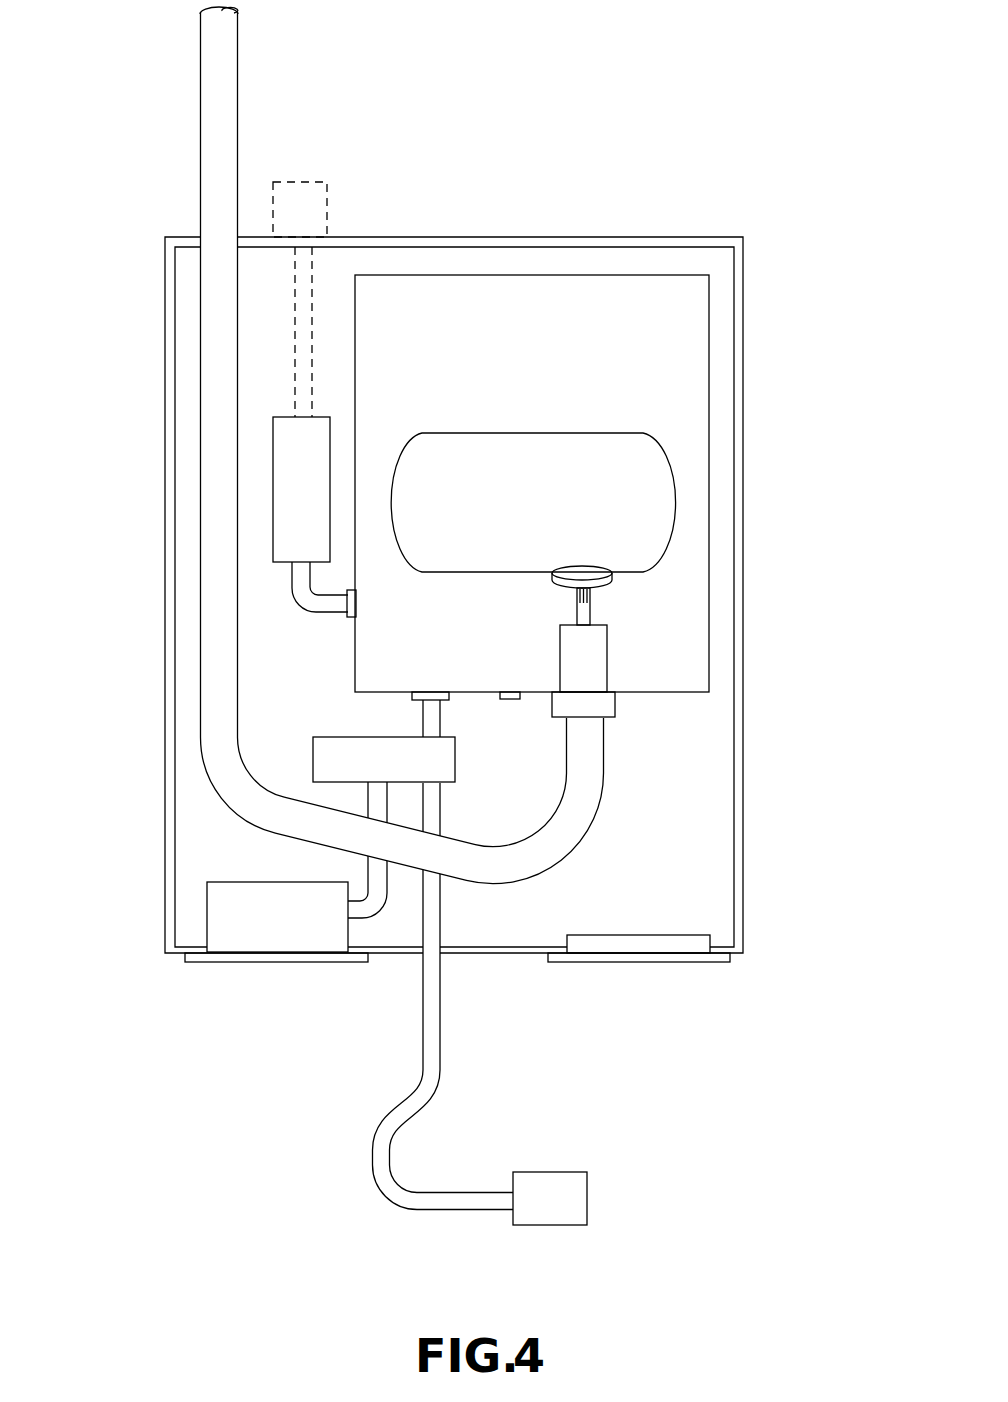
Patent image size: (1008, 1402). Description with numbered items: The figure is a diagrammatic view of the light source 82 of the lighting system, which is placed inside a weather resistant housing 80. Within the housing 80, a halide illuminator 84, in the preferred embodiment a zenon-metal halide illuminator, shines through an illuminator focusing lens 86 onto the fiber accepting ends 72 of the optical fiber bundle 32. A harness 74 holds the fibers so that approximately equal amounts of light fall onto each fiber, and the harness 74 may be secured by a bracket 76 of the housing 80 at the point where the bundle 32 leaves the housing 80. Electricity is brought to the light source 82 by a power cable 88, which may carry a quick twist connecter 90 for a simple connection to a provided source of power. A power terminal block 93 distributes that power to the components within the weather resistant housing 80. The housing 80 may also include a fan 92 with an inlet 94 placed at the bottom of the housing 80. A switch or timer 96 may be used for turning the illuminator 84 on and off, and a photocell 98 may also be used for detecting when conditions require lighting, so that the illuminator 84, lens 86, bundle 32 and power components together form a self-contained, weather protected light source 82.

The optical fiber bundle 32 is at (220, 130).
The fiber accepting ends 72 is at (590, 612).
The harness 74 is at (607, 660).
The bracket 76 is at (542, 703).
The weather resistant housing 80 is at (735, 425).
The light source 82 is at (709, 652).
The halide illuminator 84 is at (497, 475).
The illuminator focusing lens 86 is at (542, 582).
The power cable 88 is at (425, 1035).
The quick twist connecter 90 is at (555, 1207).
The fan 92 is at (263, 913).
The power terminal block 93 is at (350, 750).
The inlet 94 is at (653, 945).
The switch or timer 96 is at (305, 470).
The photocell 98 is at (325, 184).